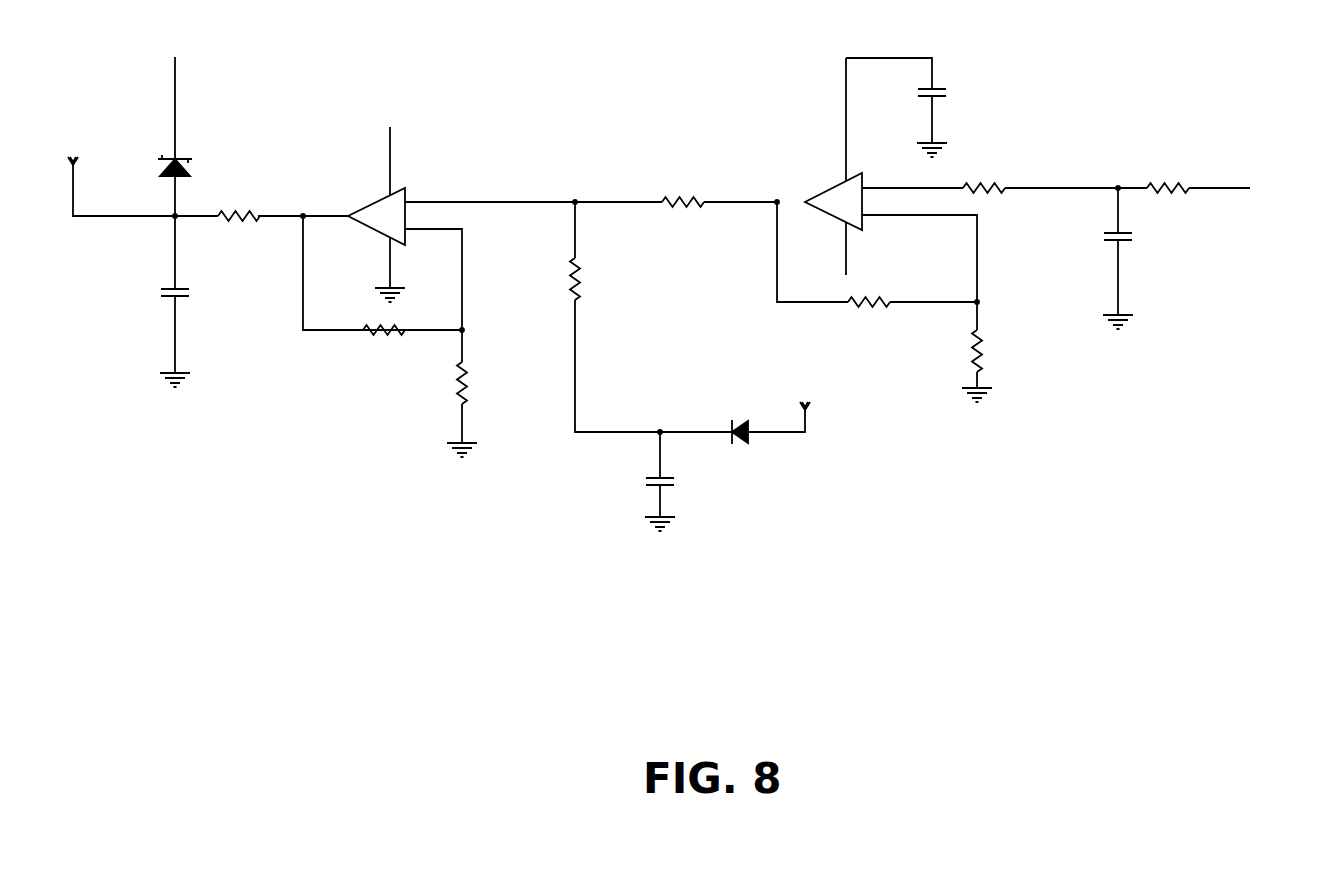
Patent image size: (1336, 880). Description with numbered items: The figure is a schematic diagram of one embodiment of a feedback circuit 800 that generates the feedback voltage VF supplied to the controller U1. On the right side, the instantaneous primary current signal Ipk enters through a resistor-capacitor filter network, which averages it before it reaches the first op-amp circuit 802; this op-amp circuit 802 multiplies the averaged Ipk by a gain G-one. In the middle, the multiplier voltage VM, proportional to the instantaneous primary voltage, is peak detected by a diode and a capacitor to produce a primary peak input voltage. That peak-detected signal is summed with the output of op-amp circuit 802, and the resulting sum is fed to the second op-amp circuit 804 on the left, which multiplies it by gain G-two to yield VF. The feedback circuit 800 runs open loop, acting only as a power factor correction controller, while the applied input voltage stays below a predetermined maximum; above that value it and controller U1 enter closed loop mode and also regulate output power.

The feedback circuit 800 is at (947, 540).
The op-amp circuit 802 is at (783, 140).
The op-amp circuit 804 is at (350, 137).